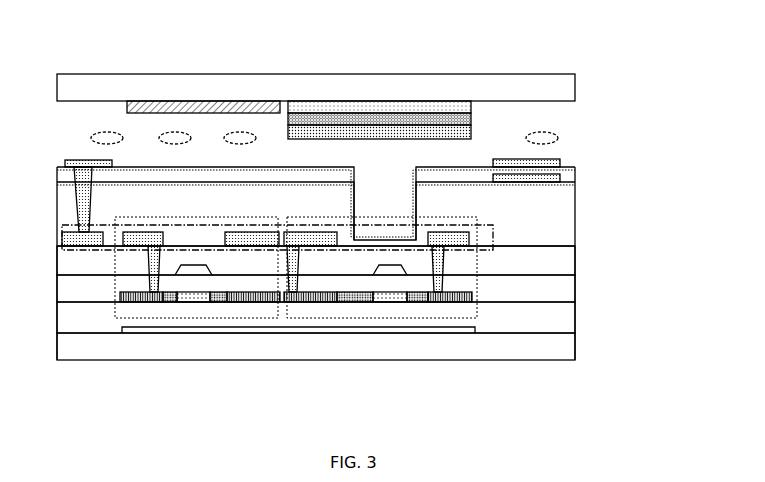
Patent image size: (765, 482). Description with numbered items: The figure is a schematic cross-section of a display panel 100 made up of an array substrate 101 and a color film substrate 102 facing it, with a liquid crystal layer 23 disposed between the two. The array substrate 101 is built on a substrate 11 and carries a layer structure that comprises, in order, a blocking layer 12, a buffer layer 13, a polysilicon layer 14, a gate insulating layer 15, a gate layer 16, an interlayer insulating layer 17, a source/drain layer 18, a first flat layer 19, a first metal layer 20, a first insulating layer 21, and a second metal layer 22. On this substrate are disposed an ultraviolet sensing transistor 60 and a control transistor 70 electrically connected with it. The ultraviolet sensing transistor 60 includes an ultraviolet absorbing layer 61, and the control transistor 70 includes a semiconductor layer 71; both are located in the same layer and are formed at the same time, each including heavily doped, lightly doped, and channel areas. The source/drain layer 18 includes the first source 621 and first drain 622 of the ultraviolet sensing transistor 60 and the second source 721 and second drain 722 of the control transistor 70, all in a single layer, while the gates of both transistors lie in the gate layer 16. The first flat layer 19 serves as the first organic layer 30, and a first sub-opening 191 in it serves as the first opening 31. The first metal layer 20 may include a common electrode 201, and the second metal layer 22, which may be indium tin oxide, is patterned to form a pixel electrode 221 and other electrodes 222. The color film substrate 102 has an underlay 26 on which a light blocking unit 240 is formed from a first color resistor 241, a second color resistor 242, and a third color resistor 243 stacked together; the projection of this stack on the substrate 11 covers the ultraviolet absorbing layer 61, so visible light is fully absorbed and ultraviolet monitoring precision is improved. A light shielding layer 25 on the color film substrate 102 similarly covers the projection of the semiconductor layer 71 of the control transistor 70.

The display panel 100 is at (613, 60).
The array substrate 101 is at (665, 165).
The color film substrate 102 is at (665, 72).
The substrate 11 is at (568, 348).
The blocking layer 12 is at (470, 327).
The buffer layer 13 is at (565, 313).
The polysilicon layer 14 is at (340, 358).
The gate insulating layer 15 is at (567, 285).
The gate layer 16 is at (403, 266).
The interlayer insulating layer 17 is at (565, 253).
The source/drain layer 18 is at (493, 234).
The first flat layer 19 is at (565, 222).
The first organic layer 30 is at (351, 263).
The first metal layer 20 is at (356, 145).
The common electrode 201 is at (575, 186).
The other electrodes 222 is at (79, 160).
The first insulating layer 21 is at (575, 176).
The second metal layer 22 is at (574, 159).
The pixel electrode 221 is at (560, 157).
The liquid crystal layer 23 is at (553, 137).
The light shielding layer 25 is at (200, 102).
The underlay 26 is at (552, 91).
The light blocking unit 240 is at (347, 41).
The first color resistor 241 is at (350, 107).
The second color resistor 242 is at (392, 118).
The third color resistor 243 is at (427, 132).
The first sub-opening 191 is at (382, 212).
The first opening 31 is at (299, 117).
The ultraviolet sensing transistor 60 is at (294, 285).
The ultraviolet absorbing layer 61 is at (293, 390).
The first source 621 is at (447, 238).
The first drain 622 is at (305, 238).
The control transistor 70 is at (113, 318).
The semiconductor layer 71 is at (107, 386).
The second source 721 is at (140, 241).
The second drain 722 is at (243, 238).